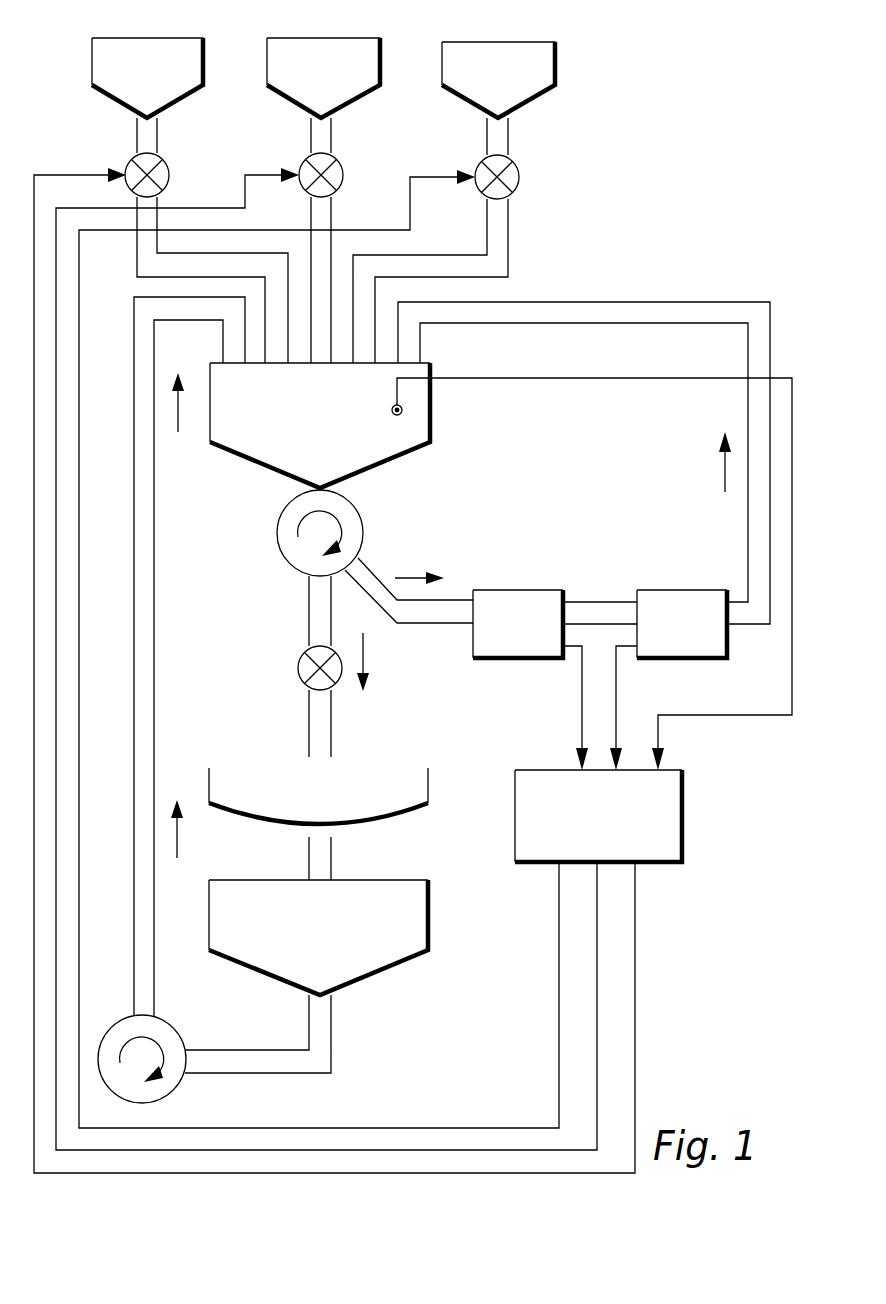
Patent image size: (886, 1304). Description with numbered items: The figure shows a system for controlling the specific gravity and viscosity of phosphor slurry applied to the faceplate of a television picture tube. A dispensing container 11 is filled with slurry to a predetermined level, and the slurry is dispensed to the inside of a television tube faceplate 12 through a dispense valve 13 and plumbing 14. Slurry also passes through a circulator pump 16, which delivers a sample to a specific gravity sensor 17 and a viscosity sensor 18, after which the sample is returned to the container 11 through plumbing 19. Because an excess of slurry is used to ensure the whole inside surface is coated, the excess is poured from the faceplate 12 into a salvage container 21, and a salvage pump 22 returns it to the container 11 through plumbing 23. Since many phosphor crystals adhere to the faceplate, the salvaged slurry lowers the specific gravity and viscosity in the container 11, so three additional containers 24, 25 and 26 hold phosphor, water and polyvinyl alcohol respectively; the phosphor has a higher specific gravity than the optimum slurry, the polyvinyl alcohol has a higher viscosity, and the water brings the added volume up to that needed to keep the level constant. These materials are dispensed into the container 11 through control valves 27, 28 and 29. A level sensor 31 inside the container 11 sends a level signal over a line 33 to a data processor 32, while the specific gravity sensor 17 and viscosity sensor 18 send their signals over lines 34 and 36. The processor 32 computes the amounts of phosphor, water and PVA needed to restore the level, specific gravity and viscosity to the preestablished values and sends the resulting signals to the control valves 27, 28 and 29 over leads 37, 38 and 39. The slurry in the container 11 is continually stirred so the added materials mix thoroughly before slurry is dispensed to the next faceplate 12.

The dispensing container 11 is at (420, 450).
The television tube faceplate 12 is at (436, 788).
The dispense valve 13 is at (298, 668).
The plumbing 14 is at (309, 728).
The circulator pump 16 is at (278, 512).
The specific gravity sensor 17 is at (525, 590).
The viscosity sensor 18 is at (682, 590).
The plumbing 19 is at (748, 408).
The salvage container 21 is at (430, 937).
The salvage pump 22 is at (175, 1025).
The plumbing 23 is at (156, 560).
The phosphor container 24 is at (153, 38).
The water container 25 is at (294, 42).
The polyvinyl alcohol container 26 is at (478, 42).
The phosphor control valve 27 is at (161, 160).
The water control valve 28 is at (337, 160).
The PVA control valve 29 is at (513, 162).
The level sensor 31 is at (403, 410).
The data processor 32 is at (683, 838).
The line 33 is at (596, 378).
The line 34 is at (582, 712).
The line 36 is at (618, 692).
The lead 37 is at (78, 173).
The lead 38 is at (216, 208).
The lead 39 is at (373, 230).